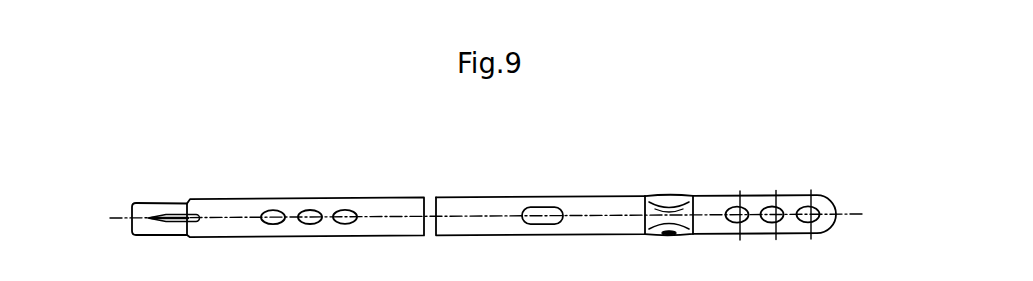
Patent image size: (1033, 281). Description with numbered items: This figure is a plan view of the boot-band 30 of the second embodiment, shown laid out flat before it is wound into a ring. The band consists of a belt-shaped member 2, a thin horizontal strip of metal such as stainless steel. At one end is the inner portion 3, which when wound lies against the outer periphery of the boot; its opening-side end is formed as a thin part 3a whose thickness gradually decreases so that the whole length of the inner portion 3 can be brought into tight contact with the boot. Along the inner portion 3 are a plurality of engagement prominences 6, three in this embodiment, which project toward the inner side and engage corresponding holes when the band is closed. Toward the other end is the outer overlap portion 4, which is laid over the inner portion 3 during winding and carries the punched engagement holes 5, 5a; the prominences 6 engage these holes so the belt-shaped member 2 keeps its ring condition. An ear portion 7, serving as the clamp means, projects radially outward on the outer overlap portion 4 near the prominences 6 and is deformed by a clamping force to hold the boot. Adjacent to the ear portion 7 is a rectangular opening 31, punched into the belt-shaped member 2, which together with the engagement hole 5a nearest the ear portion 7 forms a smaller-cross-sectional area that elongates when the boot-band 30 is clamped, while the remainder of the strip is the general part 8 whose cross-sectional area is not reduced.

The belt-shaped member 2 is at (382, 197).
The inner portion 3 is at (222, 202).
The thin part 3a is at (141, 206).
The outer overlap portion 4 is at (760, 194).
The engagement holes 5 is at (778, 207).
The engagement hole 5a is at (731, 207).
The engagement prominences 6 is at (284, 211).
The ear portion 7 is at (667, 199).
The general part 8 is at (455, 205).
The boot-band 30 is at (488, 184).
The opening 31 is at (538, 212).